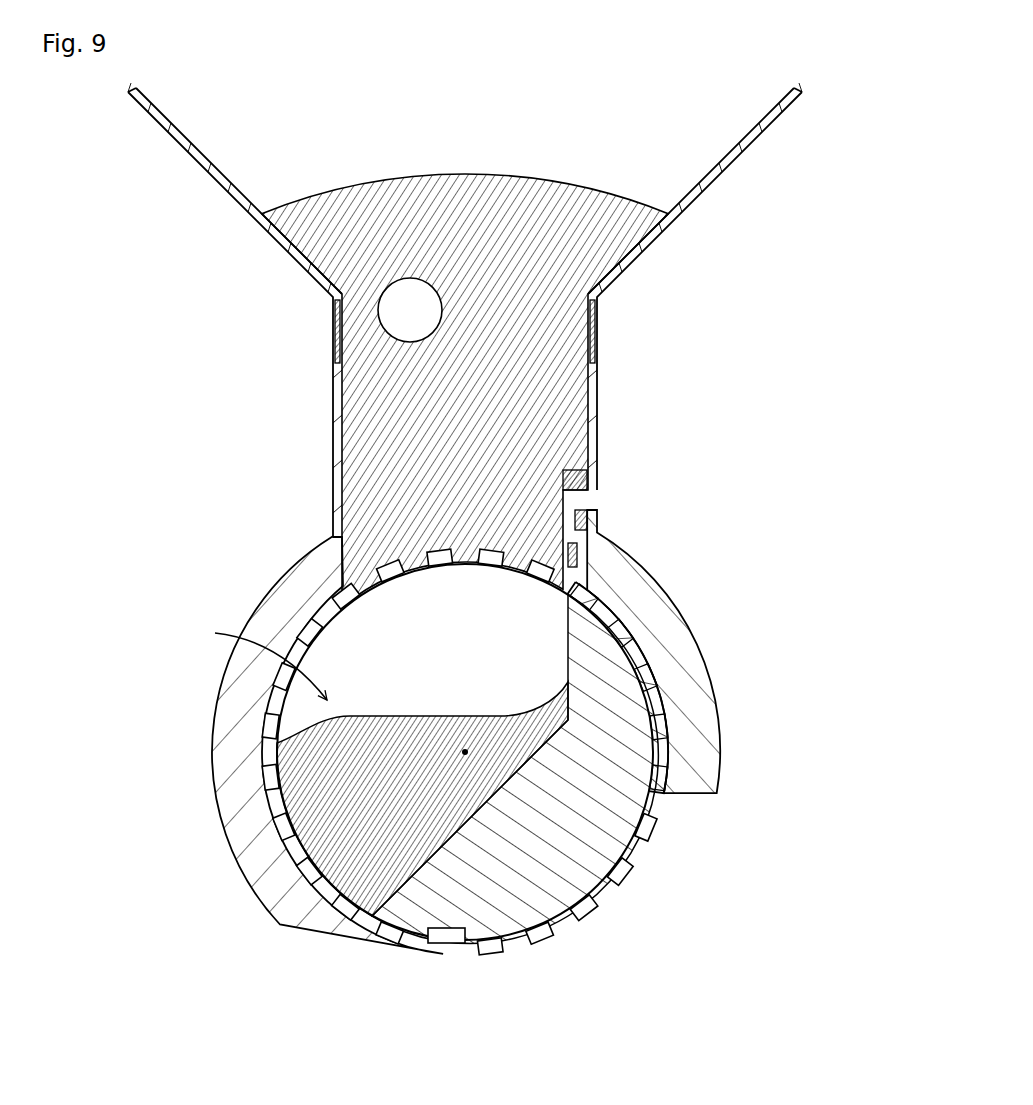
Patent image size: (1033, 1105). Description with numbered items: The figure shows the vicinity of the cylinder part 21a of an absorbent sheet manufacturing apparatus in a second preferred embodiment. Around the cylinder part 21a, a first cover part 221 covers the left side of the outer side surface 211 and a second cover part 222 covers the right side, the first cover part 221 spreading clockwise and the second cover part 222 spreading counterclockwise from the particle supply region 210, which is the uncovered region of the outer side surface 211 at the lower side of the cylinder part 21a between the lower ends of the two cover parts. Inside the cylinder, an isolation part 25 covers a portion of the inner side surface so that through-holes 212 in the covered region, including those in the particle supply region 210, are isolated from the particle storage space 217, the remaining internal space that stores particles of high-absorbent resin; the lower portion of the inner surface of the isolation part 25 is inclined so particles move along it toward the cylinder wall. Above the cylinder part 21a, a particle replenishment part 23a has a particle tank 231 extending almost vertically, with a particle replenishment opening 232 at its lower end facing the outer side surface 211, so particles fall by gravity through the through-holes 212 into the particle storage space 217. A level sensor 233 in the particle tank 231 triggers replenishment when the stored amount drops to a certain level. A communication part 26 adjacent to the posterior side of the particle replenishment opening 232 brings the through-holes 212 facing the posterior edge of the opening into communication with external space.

The particle supply region 210 is at (462, 751).
The outer side surface 211 is at (260, 727).
The through-holes 212 is at (463, 552).
The particle storage space 217 is at (215, 633).
The cylinder part 21a is at (387, 573).
The first cover part 221 is at (267, 635).
The second cover part 222 is at (667, 628).
The particle replenishment part 23a is at (465, 310).
The particle tank 231 is at (333, 400).
The particle replenishment opening 232 is at (562, 470).
The level sensor 233 is at (403, 308).
The isolation part 25 is at (632, 803).
The communication part 26 is at (577, 502).